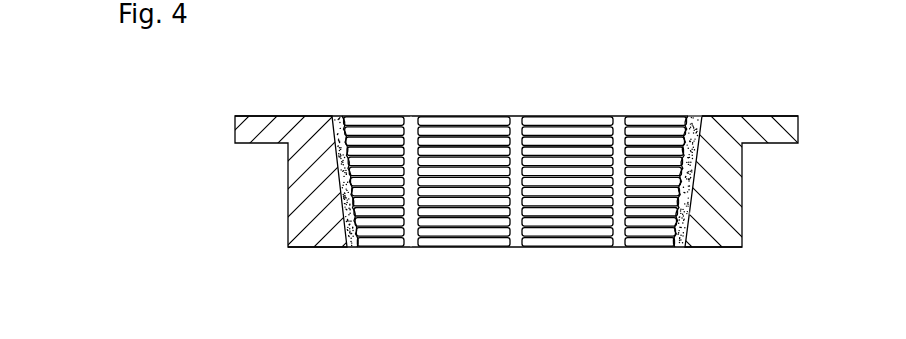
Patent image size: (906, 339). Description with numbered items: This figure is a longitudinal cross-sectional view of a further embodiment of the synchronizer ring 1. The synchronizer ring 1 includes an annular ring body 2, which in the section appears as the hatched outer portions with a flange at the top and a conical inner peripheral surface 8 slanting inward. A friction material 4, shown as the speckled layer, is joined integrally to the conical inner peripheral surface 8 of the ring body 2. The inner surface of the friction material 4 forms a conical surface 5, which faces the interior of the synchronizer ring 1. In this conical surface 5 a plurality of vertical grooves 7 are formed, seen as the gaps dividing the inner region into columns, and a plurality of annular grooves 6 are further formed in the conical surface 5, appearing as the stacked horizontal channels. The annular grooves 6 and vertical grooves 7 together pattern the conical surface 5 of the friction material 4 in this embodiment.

The synchronizer ring 1 is at (289, 100).
The annular ring body 2 is at (722, 189).
The friction material 4 is at (682, 241).
The conical surface 5 is at (687, 140).
The annular grooves 6 is at (637, 233).
The vertical grooves 7 is at (412, 247).
The conical inner peripheral surface 8 is at (690, 206).